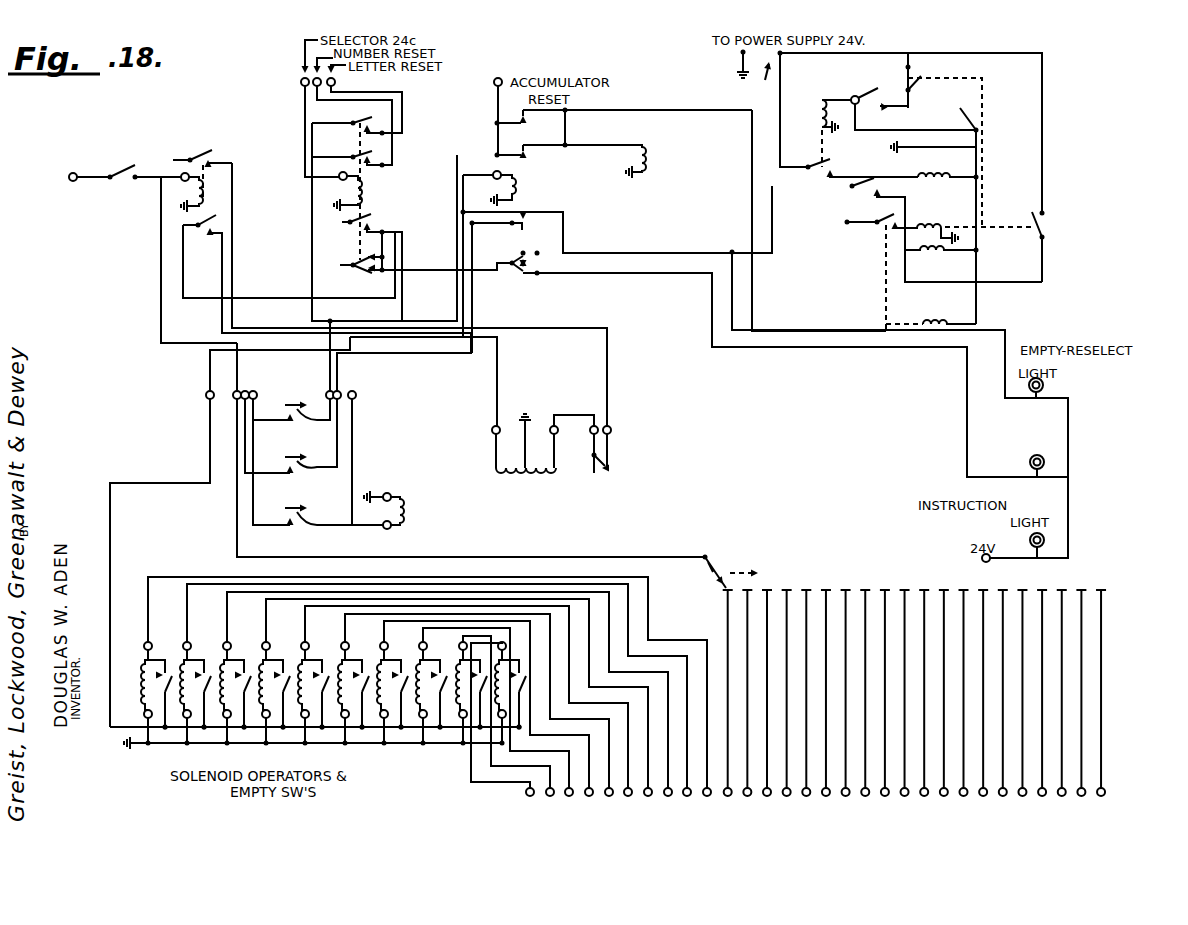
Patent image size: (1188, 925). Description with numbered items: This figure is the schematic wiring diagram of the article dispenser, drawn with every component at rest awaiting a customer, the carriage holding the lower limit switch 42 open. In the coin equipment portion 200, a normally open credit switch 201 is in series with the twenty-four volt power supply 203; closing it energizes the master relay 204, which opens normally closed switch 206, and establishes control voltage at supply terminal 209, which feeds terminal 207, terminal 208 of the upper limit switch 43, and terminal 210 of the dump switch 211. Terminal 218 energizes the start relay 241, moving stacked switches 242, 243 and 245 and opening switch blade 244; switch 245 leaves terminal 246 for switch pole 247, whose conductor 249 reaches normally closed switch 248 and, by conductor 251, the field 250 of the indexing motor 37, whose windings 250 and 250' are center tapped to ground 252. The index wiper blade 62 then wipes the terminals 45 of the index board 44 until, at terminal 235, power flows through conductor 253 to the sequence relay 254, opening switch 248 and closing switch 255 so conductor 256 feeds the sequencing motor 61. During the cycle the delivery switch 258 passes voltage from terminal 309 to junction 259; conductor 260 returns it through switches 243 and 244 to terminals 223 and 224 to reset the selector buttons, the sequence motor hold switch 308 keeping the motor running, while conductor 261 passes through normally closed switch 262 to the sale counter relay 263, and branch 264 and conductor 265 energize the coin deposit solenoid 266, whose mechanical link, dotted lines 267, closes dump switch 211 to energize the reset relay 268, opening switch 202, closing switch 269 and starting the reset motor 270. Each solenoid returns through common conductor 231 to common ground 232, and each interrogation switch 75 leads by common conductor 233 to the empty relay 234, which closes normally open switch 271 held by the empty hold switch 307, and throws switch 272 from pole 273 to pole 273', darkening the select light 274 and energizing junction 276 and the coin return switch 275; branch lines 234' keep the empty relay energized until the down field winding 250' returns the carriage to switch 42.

The terminal 208 is at (75, 174).
The upper limit switch 43 is at (118, 162).
The switch 255 is at (213, 150).
The sequence relay 254 is at (205, 190).
The conductor 260 is at (294, 214).
The normally closed switch 248 is at (213, 220).
The conductor 256 is at (226, 258).
The conductor 249 is at (251, 294).
The terminal 224 is at (302, 78).
The terminal 218 is at (313, 82).
The terminal 223 is at (335, 82).
The switch 242 is at (360, 120).
The switch 243 is at (360, 152).
The start relay 241 is at (369, 166).
The switch blade 244 is at (372, 218).
The switch 245 is at (351, 258).
The switch pole 247 is at (377, 258).
The terminal 246 is at (377, 272).
The supply terminal 209 is at (974, 126).
The junction 259 is at (331, 321).
The conductor 261 is at (443, 310).
The branch 264 is at (565, 130).
The conductor 265 is at (653, 110).
The sale counter relay 263 is at (652, 144).
The normally closed switch 262 is at (526, 155).
The empty relay 234 is at (518, 192).
The branch lines 234' is at (617, 219).
The normally open switch 271 is at (509, 264).
The pole 273' is at (500, 250).
The pole 273 is at (789, 364).
The single throw double pole switch 272 is at (514, 268).
The junction 276 is at (731, 250).
The power supply 203 is at (748, 76).
The credit switch 201 is at (876, 97).
The normally closed switch 202 is at (912, 74).
The master relay 204 is at (823, 109).
The normally closed switch 206 is at (833, 166).
The coin return switch 275 is at (850, 189).
The terminal 210 is at (847, 222).
The dump switch 211 is at (883, 226).
The dotted lines 267 is at (884, 282).
The reset relay 268 is at (957, 222).
The normally open switch 269 is at (1044, 216).
The reset motor 270 is at (976, 250).
The coin deposit solenoid 266 is at (976, 324).
The coin equipment portion 200 is at (1052, 171).
The terminal 207 is at (235, 389).
The terminal 309 is at (254, 392).
The delivery switch 258 is at (317, 423).
The empty hold switch 307 is at (333, 463).
The sequence motor hold switch 308 is at (303, 513).
The sequencing motor 61 is at (404, 492).
The electrical conductor 251 is at (499, 359).
The ground 252 is at (538, 418).
The field 250 is at (499, 449).
The down field winding 250' is at (564, 441).
The lower limit switch 42 is at (614, 457).
The indexing motor 37 is at (488, 488).
The index wiper blade 62 is at (727, 566).
The terminal 235 is at (726, 596).
The printed circuit index board 44 is at (945, 583).
The terminals 45 is at (1078, 585).
The select light 274 is at (1029, 462).
The common electrical conductor 233 is at (112, 582).
The electrical conductor 253 is at (224, 532).
The interrogation switch 75 is at (169, 664).
The common ground 232 is at (127, 755).
The common conductor 231 is at (397, 743).